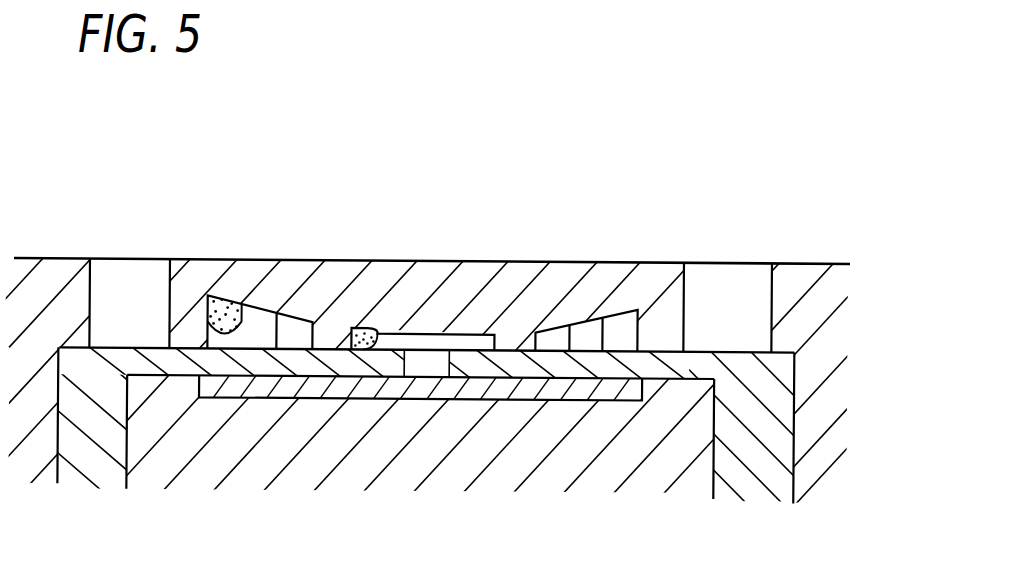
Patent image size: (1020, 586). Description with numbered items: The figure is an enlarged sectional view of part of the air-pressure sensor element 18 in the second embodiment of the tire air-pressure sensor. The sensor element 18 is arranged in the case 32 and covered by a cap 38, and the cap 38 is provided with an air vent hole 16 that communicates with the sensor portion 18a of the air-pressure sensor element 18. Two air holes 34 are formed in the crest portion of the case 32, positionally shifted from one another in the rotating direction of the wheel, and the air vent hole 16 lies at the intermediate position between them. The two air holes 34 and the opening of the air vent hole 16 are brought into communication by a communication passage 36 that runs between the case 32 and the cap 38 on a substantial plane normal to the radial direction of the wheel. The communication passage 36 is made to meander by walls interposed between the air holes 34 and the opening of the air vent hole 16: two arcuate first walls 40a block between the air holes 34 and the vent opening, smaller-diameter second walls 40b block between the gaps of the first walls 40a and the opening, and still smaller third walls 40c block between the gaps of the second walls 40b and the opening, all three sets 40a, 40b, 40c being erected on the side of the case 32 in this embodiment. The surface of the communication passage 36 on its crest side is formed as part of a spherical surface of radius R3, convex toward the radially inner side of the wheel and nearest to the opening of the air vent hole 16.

The air vent hole 16 is at (435, 362).
The air-pressure sensor element 18 is at (513, 456).
The sensor portion 18a is at (365, 390).
The case 32 is at (245, 273).
The air holes 34 is at (124, 282).
The communication passage 36 is at (457, 340).
The cap 38 is at (765, 462).
The first walls 40a is at (190, 324).
The second walls 40b is at (262, 328).
The third walls 40c is at (340, 307).
The radius of spherical surface R3 is at (422, 312).